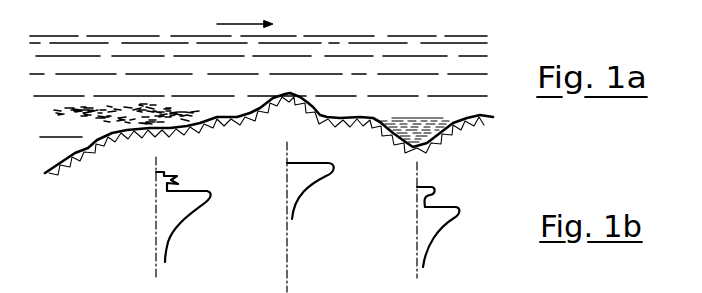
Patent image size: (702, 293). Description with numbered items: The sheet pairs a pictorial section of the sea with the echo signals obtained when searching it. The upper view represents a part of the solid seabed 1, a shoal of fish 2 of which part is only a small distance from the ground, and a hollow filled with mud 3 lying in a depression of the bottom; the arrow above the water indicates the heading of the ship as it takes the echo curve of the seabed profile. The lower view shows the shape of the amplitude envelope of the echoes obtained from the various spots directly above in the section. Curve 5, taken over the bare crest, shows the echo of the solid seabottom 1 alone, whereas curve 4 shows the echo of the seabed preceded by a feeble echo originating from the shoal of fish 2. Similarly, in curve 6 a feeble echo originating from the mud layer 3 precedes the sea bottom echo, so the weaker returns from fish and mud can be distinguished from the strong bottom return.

In FIG. 1a, the solid seabed 1 is at (96, 152).
In FIG. 1a, the shoal of fish 2 is at (167, 110).
In FIG. 1a, the hollow filled with mud 3 is at (417, 132).
In FIG. 1b, the echo curve 4 is at (180, 230).
In FIG. 1b, the echo curve 5 is at (302, 197).
In FIG. 1b, the echo curve 6 is at (438, 233).